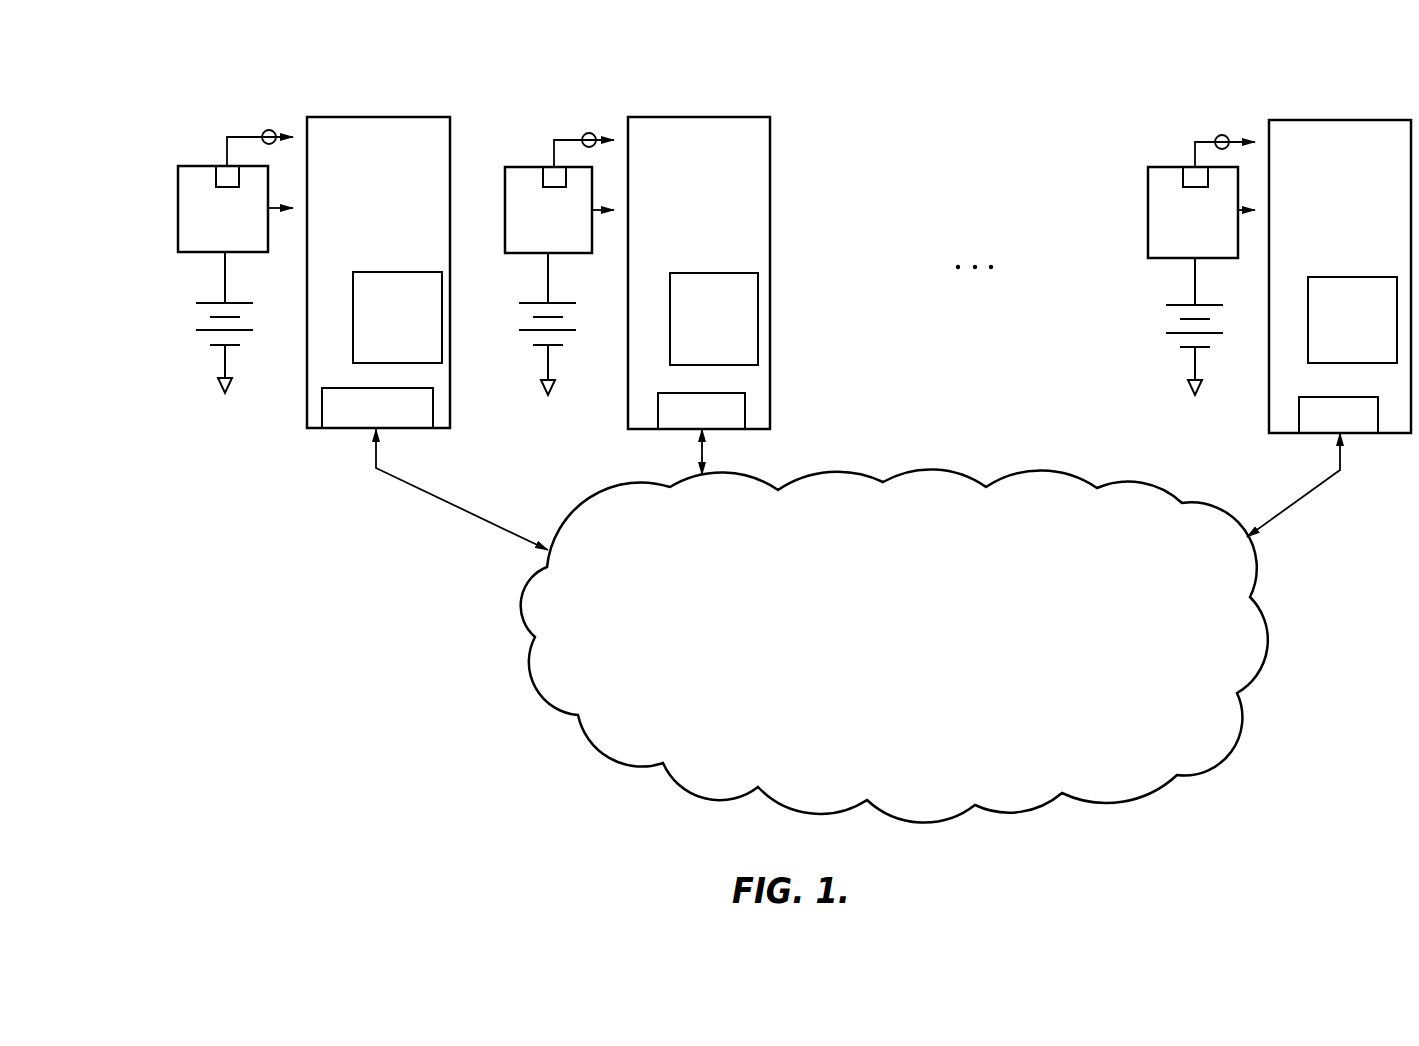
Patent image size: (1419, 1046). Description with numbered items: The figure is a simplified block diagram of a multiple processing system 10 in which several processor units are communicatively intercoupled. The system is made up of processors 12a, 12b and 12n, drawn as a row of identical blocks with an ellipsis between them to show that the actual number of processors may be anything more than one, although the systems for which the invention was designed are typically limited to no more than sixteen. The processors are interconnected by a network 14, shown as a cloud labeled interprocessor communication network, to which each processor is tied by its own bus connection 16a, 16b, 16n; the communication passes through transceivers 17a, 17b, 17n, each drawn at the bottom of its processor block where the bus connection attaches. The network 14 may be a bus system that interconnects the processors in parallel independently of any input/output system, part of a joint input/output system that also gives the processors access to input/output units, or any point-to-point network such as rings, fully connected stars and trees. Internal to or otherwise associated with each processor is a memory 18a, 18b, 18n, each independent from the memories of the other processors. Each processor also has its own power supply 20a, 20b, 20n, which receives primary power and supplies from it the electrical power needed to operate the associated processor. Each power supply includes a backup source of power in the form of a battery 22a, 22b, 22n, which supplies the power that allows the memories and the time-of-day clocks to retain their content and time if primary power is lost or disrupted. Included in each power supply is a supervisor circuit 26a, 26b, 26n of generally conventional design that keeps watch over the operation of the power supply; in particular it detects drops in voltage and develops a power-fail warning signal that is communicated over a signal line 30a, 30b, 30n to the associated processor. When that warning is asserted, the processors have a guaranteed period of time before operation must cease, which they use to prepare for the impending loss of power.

The multiple processing system 10 is at (1052, 95).
The processor 12a is at (405, 117).
The processor 12b is at (706, 117).
The processor 12n is at (1361, 120).
The network 14 is at (1264, 640).
The bus connection 16a is at (437, 498).
The bus connection 16b is at (700, 455).
The bus connection 16n is at (1293, 505).
The transceiver 17a is at (407, 430).
The transceiver 17b is at (733, 431).
The transceiver 17n is at (1362, 434).
The memory 18a is at (417, 272).
The memory 18b is at (740, 273).
The memory 18n is at (1368, 277).
The power supply 20a is at (178, 189).
The power supply 20b is at (505, 192).
The power supply 20n is at (1148, 195).
The battery 22a is at (200, 326).
The battery 22b is at (523, 326).
The battery 22n is at (1162, 327).
The supervisor circuit 26a is at (236, 188).
The supervisor circuit 26b is at (558, 189).
The supervisor circuit 26n is at (1200, 189).
The signal line 30a is at (272, 130).
The signal line 30b is at (594, 133).
The signal line 30n is at (1224, 135).